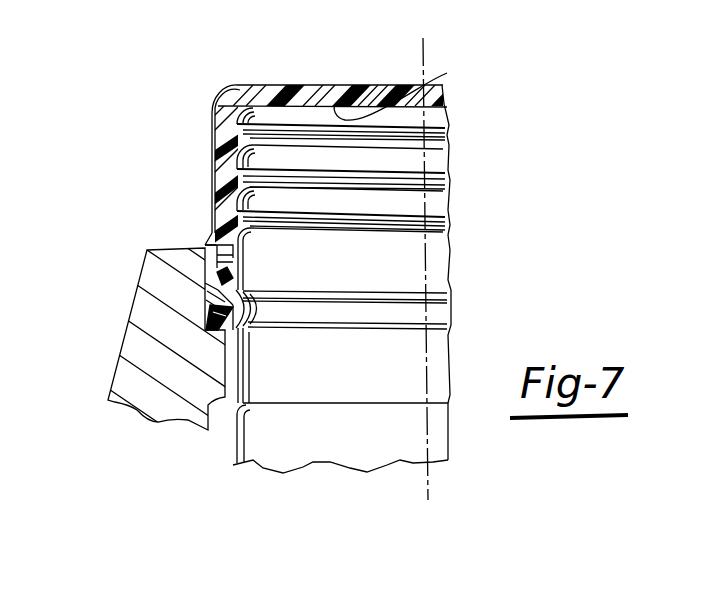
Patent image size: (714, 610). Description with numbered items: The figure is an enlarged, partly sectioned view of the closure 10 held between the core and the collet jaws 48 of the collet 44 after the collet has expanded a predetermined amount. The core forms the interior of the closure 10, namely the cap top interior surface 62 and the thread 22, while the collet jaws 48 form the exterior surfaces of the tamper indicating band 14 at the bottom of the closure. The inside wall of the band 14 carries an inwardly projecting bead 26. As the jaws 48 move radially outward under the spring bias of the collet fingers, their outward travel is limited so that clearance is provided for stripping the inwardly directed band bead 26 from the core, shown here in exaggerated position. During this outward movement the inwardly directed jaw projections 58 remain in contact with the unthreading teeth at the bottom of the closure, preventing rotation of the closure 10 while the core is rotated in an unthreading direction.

The closure 10 is at (299, 72).
The cap top interior surface 62 is at (402, 82).
The thread 22 is at (290, 226).
The inwardly projecting bead 26 is at (242, 337).
The collet 44 is at (308, 452).
The jaw projections 58 is at (207, 246).
The tamper indicating band 14 is at (205, 289).
The collet jaws 48 is at (124, 361).